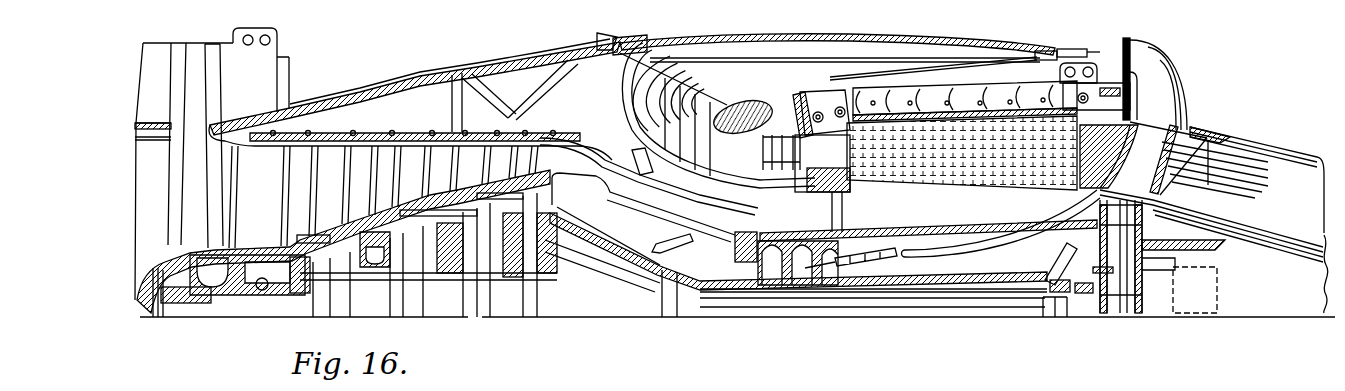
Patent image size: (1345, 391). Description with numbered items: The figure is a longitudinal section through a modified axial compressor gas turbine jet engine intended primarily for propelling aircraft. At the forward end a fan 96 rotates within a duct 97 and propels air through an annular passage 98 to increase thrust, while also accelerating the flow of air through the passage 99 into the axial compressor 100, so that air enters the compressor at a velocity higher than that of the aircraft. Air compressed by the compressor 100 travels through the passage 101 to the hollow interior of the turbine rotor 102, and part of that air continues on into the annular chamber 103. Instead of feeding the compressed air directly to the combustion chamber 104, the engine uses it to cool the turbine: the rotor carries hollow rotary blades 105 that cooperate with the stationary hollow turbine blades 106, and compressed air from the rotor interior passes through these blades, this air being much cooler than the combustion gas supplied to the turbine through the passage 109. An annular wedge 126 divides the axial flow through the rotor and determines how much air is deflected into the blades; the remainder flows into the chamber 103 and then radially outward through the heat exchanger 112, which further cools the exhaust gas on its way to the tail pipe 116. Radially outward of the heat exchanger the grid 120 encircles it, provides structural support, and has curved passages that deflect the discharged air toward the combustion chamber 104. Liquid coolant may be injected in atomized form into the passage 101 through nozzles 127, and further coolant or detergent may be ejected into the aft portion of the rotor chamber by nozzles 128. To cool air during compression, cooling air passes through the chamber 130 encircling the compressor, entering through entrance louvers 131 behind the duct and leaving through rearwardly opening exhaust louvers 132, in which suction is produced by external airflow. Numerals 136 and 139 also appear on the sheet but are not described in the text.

The fan 96 is at (183, 240).
The duct 97 is at (224, 43).
The annular passage 98 is at (283, 80).
The passage 99 is at (145, 253).
The axial compressor 100 is at (407, 160).
The passage 101 is at (720, 219).
The turbine rotor 102 is at (790, 222).
The annular chamber 103 is at (944, 222).
The combustion chamber 104 is at (782, 89).
The hollow rotary blades 105 is at (803, 147).
The stationary hollow turbine blades 106 is at (787, 135).
The passage 109 is at (710, 142).
The heat exchanger 112 is at (1030, 170).
The tail pipe 116 is at (1280, 200).
The grid 120 is at (1013, 100).
The annular wedge 126 is at (822, 190).
The nozzles 127 is at (650, 166).
The nozzles 128 is at (833, 277).
The chamber 130 is at (590, 112).
The entrance louvers 131 is at (333, 90).
The exhaust louvers 132 is at (612, 45).
The reference line 136 is at (776, 384).
The reference line 139 is at (1113, 390).